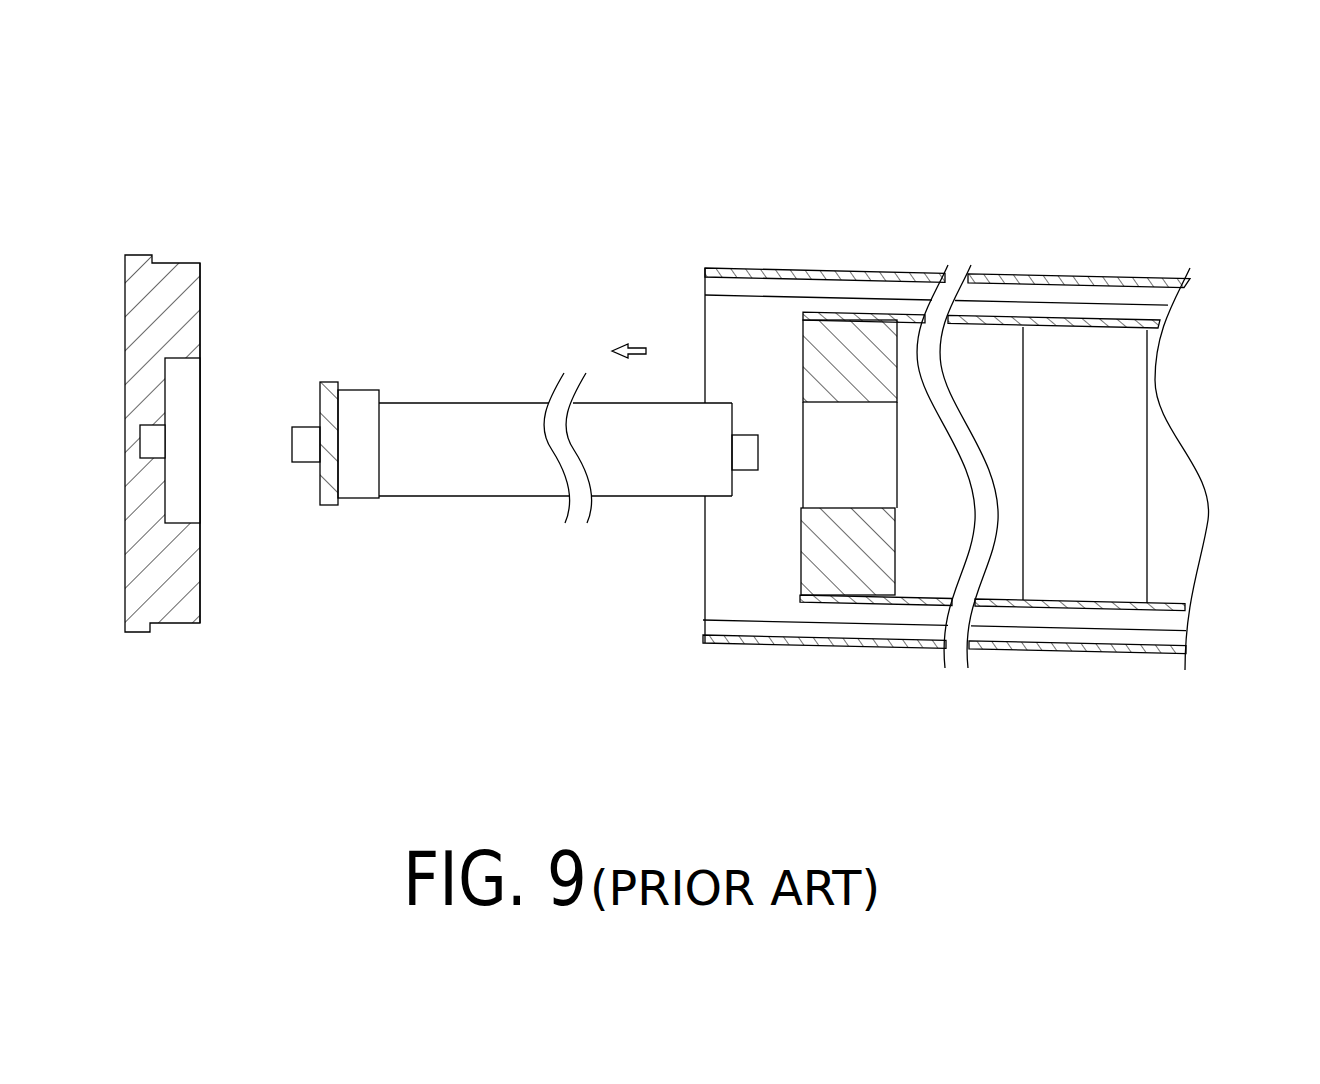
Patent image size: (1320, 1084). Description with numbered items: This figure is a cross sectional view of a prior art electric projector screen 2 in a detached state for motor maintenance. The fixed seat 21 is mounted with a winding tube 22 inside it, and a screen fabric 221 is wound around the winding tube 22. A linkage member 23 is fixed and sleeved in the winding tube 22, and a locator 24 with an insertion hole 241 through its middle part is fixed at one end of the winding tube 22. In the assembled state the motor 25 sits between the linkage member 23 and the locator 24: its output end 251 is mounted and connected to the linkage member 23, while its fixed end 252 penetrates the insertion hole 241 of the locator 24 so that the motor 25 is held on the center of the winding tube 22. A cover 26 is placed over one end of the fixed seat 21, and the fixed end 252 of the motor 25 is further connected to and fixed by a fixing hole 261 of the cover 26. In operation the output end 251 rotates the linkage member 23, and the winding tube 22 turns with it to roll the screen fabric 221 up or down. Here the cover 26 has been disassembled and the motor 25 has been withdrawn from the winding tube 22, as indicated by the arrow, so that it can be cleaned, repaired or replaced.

The electric projector screen 2 is at (727, 222).
The fixed seat 21 is at (1005, 275).
The screen fabric 221 is at (1102, 307).
The winding tube 22 is at (1162, 320).
The linkage member 23 is at (1090, 577).
The locator 24 is at (848, 333).
The insertion hole 241 is at (883, 417).
The motor 25 is at (482, 423).
The output end 251 is at (747, 463).
The fixed end 252 is at (307, 453).
The cover 26 is at (190, 303).
The fixing hole 261 is at (158, 440).